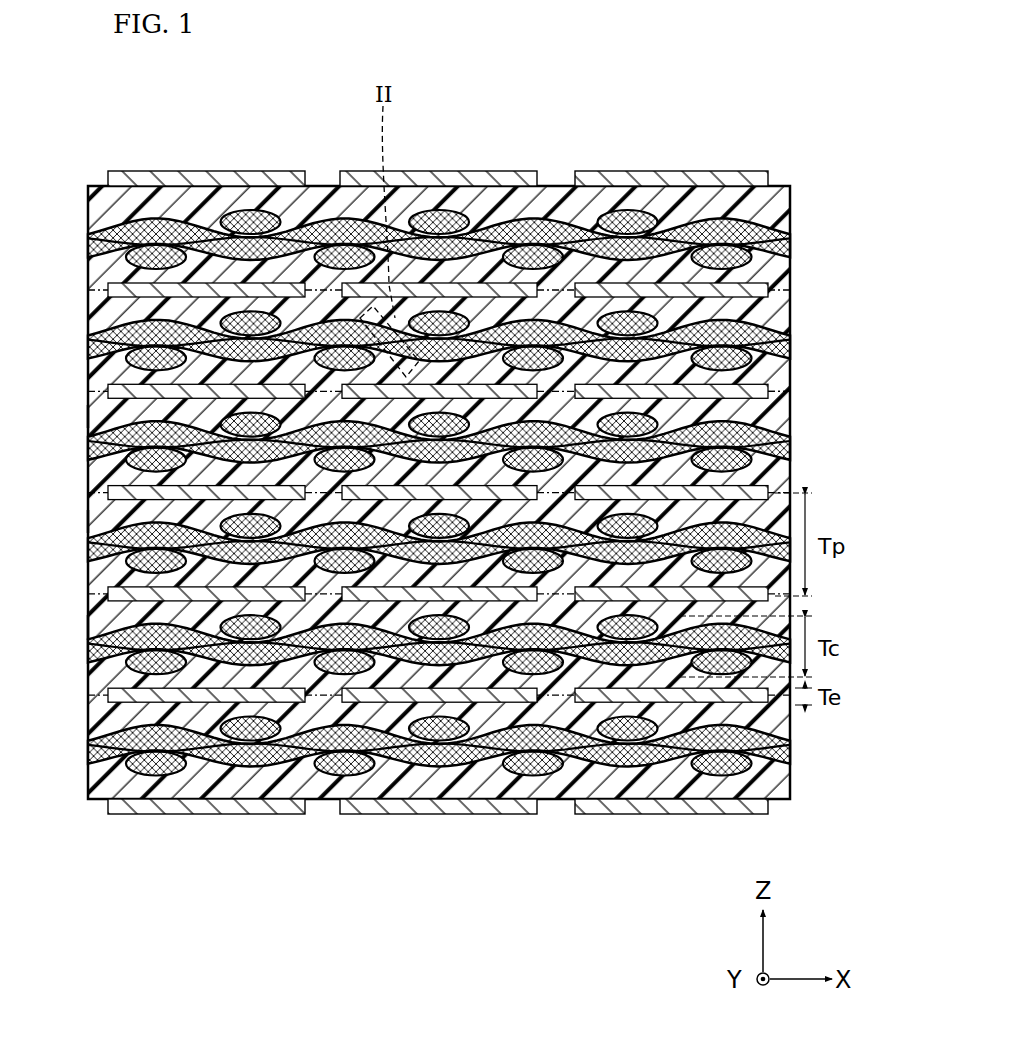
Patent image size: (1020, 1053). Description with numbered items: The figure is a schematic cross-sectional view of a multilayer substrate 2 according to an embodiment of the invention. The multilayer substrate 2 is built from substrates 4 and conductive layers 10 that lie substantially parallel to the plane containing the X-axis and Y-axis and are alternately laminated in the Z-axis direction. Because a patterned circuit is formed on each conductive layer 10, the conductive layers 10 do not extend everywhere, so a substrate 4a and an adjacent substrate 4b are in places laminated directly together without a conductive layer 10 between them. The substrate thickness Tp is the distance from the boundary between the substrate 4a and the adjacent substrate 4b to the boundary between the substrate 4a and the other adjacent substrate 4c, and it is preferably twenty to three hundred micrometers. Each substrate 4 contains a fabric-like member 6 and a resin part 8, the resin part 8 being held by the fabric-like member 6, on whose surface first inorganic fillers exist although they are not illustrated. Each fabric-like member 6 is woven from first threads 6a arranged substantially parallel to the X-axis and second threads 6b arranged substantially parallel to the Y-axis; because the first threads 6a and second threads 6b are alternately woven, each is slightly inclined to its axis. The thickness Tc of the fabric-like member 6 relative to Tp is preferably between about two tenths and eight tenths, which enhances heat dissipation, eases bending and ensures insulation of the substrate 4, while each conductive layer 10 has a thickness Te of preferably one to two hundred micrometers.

The multilayer substrate 2 is at (436, 441).
The substrate 4 is at (101, 196).
The substrate 4a is at (95, 516).
The adjacent another substrate 4b is at (92, 410).
The other adjacent another substrate 4c is at (95, 621).
The fabric-like member 6 is at (404, 493).
The first threads 6a is at (92, 338).
The second threads 6b is at (92, 357).
The resin part 8 is at (757, 378).
The conductive layer 10 is at (757, 290).